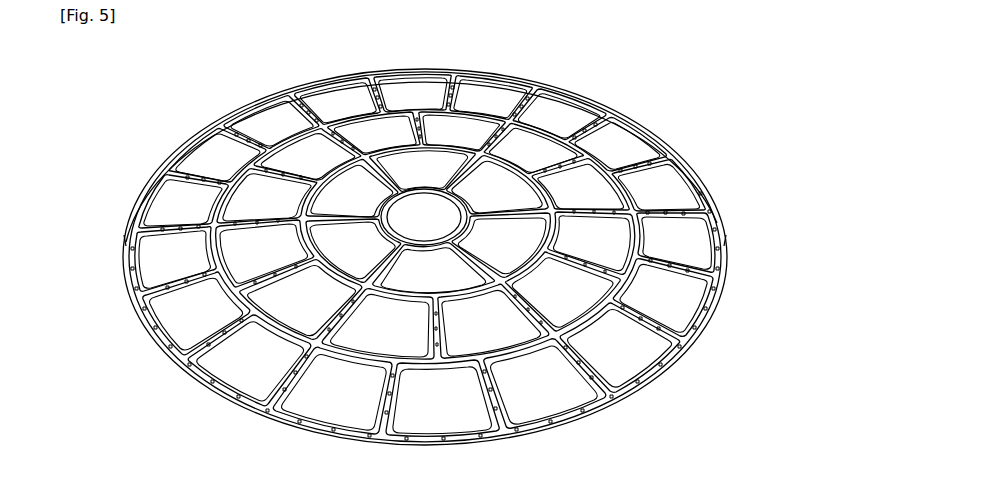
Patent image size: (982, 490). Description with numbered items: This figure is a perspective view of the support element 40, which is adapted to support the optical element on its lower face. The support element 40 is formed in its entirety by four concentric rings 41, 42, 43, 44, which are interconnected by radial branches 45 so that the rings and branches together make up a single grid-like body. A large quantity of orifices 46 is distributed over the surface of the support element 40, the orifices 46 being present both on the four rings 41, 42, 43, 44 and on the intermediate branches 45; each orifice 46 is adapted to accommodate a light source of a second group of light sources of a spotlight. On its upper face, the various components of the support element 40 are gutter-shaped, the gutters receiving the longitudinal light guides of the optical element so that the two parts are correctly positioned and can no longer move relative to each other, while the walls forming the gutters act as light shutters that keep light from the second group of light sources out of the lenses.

The support element 40 is at (470, 260).
The ring 41 is at (660, 140).
The ring 42 is at (600, 117).
The ring 43 is at (510, 157).
The ring 44 is at (433, 183).
The radial branch 45 is at (442, 338).
The orifice 46 is at (722, 302).